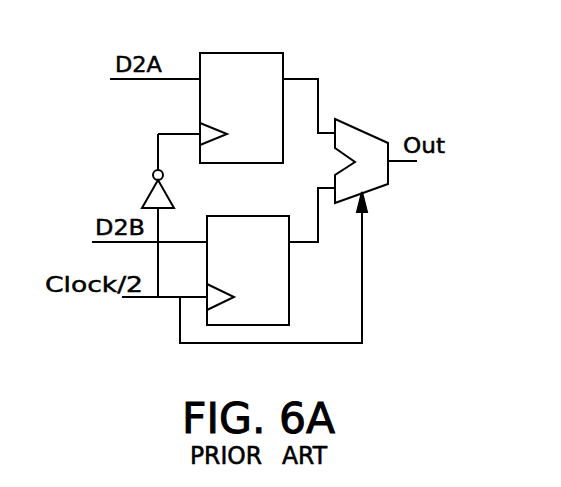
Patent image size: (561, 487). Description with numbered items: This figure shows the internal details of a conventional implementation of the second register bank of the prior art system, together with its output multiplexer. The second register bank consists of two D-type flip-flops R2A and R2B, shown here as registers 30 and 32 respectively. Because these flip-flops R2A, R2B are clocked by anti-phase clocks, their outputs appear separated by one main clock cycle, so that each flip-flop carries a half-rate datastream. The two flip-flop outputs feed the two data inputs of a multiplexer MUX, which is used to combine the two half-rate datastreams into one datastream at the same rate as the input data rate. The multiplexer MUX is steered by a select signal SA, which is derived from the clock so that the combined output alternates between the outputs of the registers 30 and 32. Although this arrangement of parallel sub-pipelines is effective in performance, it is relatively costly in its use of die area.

The flip-flop R2A 30 is at (227, 124).
The flip-flop R2B 32 is at (233, 288).
The flip-flop of the second register bank R2A is at (241, 90).
The flip-flop of the second register bank R2B is at (248, 257).
The multiplexer MUX is at (368, 150).
The select signal SA is at (276, 257).